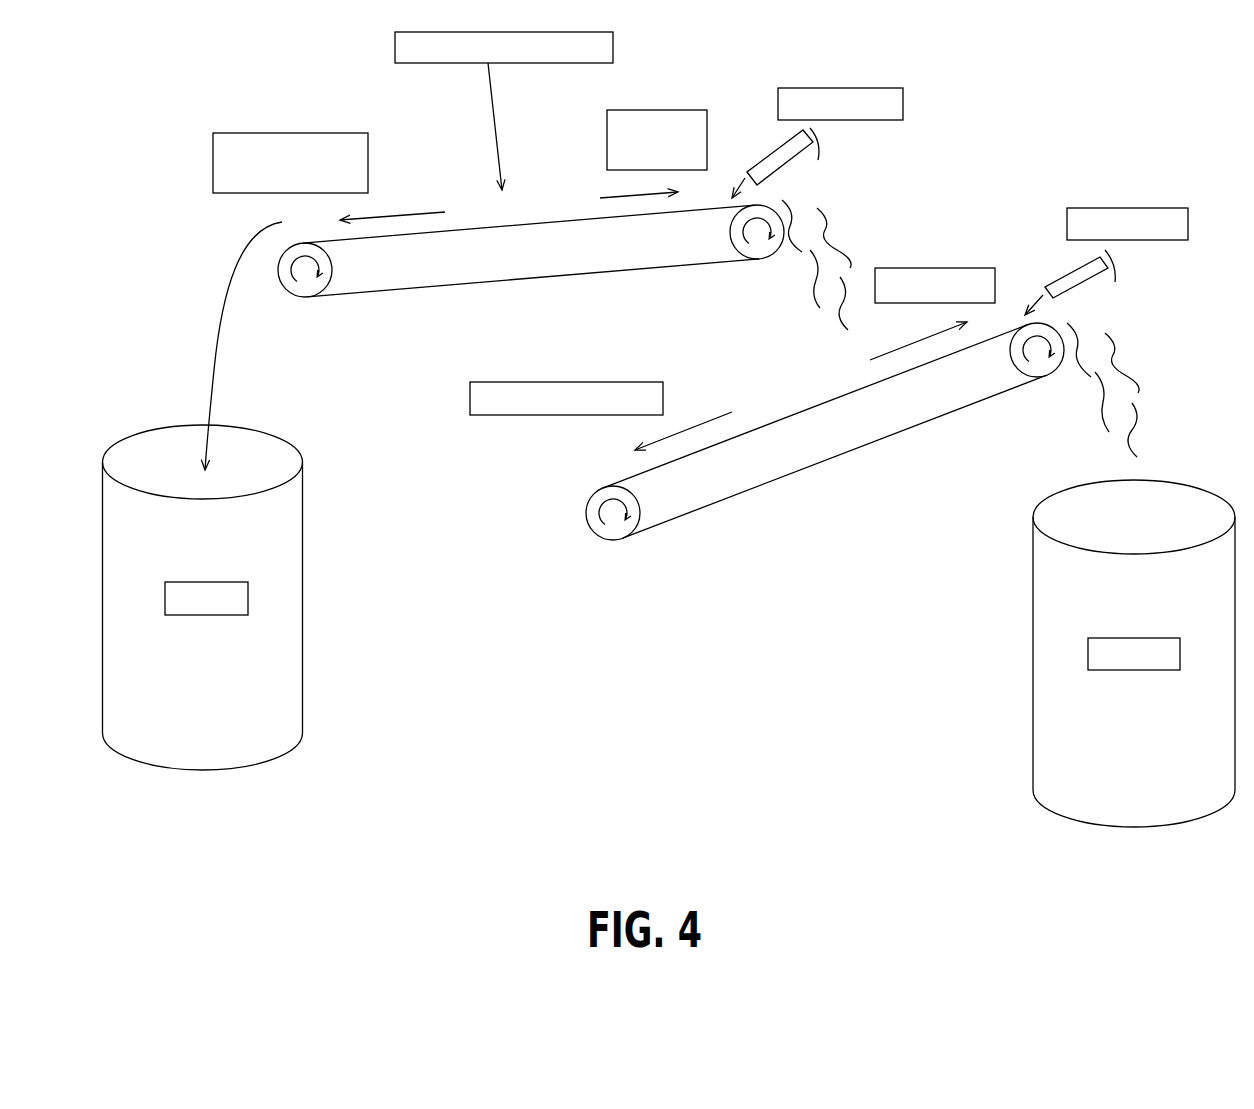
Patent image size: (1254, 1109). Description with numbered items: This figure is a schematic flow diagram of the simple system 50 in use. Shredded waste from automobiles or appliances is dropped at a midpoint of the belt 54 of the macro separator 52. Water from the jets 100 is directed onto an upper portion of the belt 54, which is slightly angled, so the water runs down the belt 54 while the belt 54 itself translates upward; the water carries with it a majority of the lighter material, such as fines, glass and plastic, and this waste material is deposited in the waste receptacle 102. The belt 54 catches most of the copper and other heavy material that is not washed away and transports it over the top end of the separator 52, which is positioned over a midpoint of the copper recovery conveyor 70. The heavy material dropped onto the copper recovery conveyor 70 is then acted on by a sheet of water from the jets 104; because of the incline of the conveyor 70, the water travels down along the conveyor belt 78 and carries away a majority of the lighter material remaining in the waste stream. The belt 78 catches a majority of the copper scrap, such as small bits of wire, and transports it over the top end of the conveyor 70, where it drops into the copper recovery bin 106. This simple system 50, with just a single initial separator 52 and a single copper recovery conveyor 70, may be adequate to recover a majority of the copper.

The simple system 50 is at (255, 115).
The macro separator 52 is at (437, 305).
The belt 54 is at (477, 228).
The copper recovery conveyor 70 is at (840, 475).
The conveyor belt 78 is at (780, 417).
The jets 100 is at (767, 160).
The waste receptacle 102 is at (228, 667).
The jets 104 is at (1058, 280).
The copper recovery bin 106 is at (1157, 720).